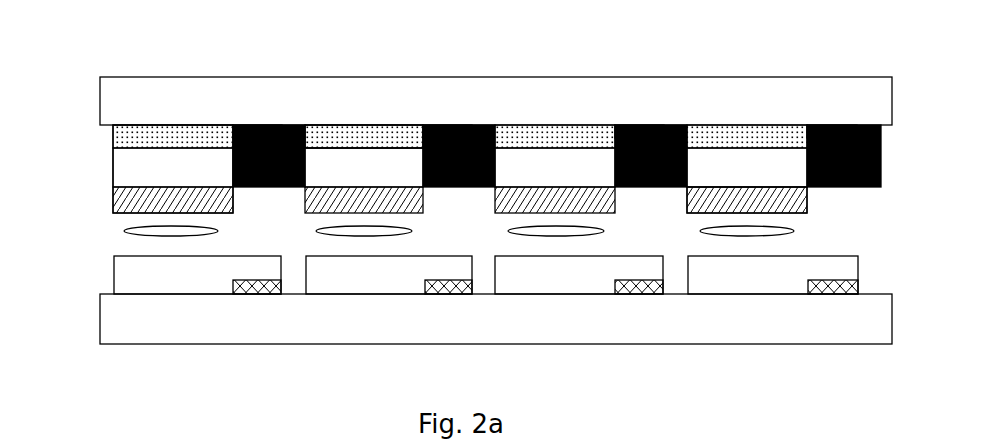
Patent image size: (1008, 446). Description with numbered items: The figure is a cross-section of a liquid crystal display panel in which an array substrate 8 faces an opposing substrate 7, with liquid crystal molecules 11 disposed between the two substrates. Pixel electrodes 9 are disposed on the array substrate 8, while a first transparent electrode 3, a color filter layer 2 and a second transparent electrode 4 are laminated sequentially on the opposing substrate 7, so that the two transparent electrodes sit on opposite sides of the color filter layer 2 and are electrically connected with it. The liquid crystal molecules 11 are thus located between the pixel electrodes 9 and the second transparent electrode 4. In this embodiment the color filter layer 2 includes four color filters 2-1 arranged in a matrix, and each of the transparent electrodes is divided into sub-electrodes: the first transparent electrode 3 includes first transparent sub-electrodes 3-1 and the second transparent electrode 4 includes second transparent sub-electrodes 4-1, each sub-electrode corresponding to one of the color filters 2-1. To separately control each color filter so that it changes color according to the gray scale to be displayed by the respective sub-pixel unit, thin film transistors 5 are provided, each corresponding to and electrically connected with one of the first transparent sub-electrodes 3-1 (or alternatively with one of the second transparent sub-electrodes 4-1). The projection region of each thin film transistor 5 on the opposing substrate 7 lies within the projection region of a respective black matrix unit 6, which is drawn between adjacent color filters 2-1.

The color filter layer 2 is at (125, 167).
The color filters 2-1 is at (460, 184).
The first transparent electrode 3 is at (328, 138).
The first transparent sub-electrodes 3-1 is at (460, 136).
The second transparent electrode 4 is at (808, 198).
The second transparent sub-electrodes 4-1 is at (460, 200).
The thin film transistors 5 is at (240, 127).
The black matrix unit 6 is at (250, 188).
The opposing substrate 7 is at (572, 85).
The array substrate 8 is at (648, 332).
The pixel electrodes 9 is at (133, 275).
The liquid crystal molecules 11 is at (373, 233).